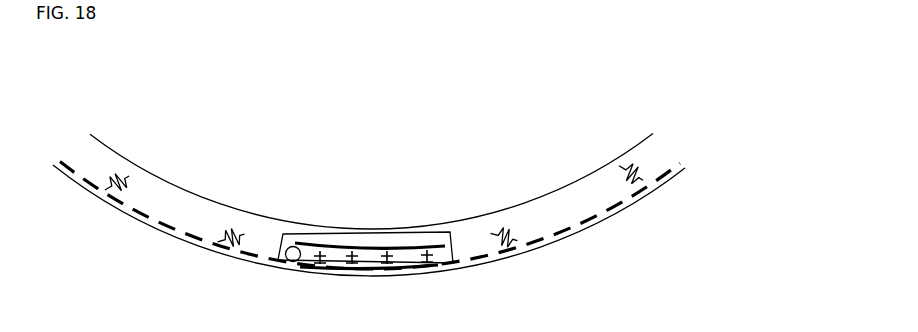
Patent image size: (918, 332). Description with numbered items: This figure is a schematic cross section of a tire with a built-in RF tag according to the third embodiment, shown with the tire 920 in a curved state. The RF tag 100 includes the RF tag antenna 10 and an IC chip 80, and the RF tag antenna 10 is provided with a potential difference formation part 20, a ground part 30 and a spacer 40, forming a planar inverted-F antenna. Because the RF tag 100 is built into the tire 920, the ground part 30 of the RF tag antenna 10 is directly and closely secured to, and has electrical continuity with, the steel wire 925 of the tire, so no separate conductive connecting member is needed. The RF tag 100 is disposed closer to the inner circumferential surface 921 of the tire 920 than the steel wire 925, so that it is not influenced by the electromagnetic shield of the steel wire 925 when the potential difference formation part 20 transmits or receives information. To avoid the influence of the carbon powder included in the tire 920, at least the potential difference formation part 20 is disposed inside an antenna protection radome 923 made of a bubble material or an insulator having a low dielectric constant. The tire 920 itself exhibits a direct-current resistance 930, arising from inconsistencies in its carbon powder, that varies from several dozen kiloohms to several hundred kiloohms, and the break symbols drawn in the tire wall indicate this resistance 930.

The RF tag 100 is at (423, 130).
The RF tag antenna 10 is at (425, 177).
The potential difference formation part 20 is at (327, 245).
The ground part 30 is at (366, 270).
The spacer 40 is at (397, 248).
The IC chip 80 is at (289, 249).
The tire 920 is at (164, 209).
The inner circumferential surface 921 is at (107, 146).
The antenna protection radome 923 is at (450, 257).
The steel wire 925 is at (490, 258).
The direct-current resistance 930 is at (492, 238).